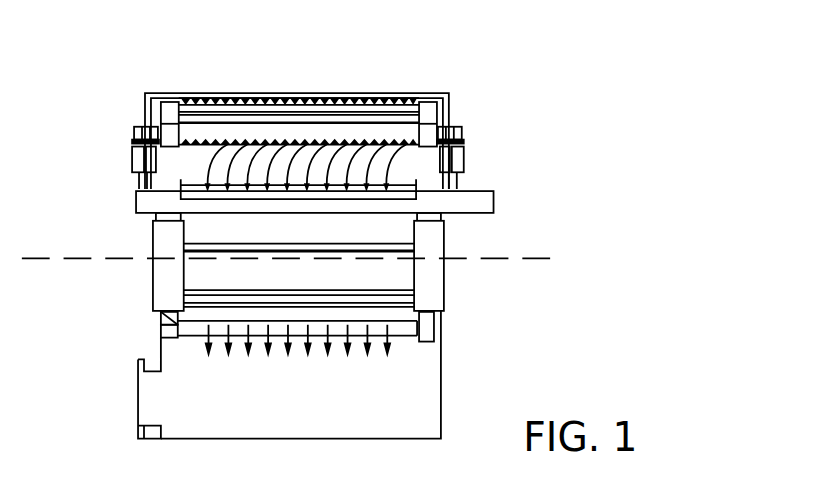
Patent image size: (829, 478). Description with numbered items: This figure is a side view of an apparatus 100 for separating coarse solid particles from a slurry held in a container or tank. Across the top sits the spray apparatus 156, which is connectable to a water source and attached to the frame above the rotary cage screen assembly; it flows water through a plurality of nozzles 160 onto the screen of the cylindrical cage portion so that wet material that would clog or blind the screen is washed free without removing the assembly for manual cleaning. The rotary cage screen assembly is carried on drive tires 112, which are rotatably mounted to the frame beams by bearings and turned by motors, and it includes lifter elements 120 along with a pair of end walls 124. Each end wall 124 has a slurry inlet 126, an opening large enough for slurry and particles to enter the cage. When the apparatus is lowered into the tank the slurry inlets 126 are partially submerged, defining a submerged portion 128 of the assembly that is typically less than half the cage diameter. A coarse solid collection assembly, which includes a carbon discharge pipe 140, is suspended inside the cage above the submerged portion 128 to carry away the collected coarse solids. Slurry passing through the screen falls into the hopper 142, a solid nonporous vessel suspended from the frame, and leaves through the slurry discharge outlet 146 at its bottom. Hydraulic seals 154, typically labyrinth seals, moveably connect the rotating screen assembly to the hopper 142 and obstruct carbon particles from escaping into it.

The apparatus 100 is at (640, 60).
The drive tire 112 is at (438, 116).
The lifter element 120 is at (156, 118).
The end wall 124 is at (162, 331).
The slurry inlet 126 is at (142, 270).
The submerged portion 128 is at (540, 259).
The carbon discharge pipe 140 is at (497, 190).
The hopper 142 is at (464, 379).
The slurry discharge outlet 146 is at (128, 405).
The hydraulic seal 154 is at (162, 329).
The spray apparatus 156 is at (165, 84).
The nozzle 160 is at (318, 95).